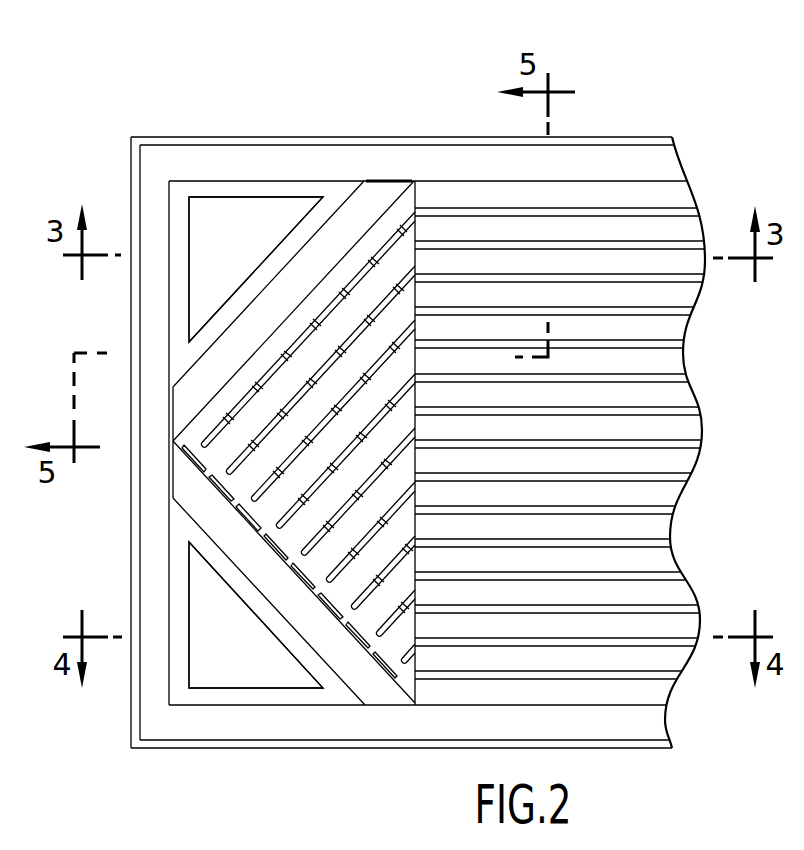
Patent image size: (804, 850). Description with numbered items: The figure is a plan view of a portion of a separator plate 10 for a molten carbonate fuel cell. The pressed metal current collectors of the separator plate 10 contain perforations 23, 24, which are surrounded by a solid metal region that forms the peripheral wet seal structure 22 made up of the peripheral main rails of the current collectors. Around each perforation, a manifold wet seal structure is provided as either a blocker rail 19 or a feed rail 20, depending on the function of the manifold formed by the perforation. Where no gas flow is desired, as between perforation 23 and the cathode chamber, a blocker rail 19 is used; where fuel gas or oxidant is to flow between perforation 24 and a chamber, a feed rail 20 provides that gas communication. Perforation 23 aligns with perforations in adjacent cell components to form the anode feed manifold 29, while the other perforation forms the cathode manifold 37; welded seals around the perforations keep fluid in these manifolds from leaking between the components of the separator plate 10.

The separator plate 10 is at (152, 88).
The blocker rail 19 is at (387, 190).
The feed rail 20 is at (385, 688).
The peripheral wet seal structure 22 is at (325, 163).
The perforation 23 is at (234, 212).
The perforation 24 is at (240, 677).
The anode feed manifold 29 is at (231, 262).
The cathode manifold 37 is at (231, 653).